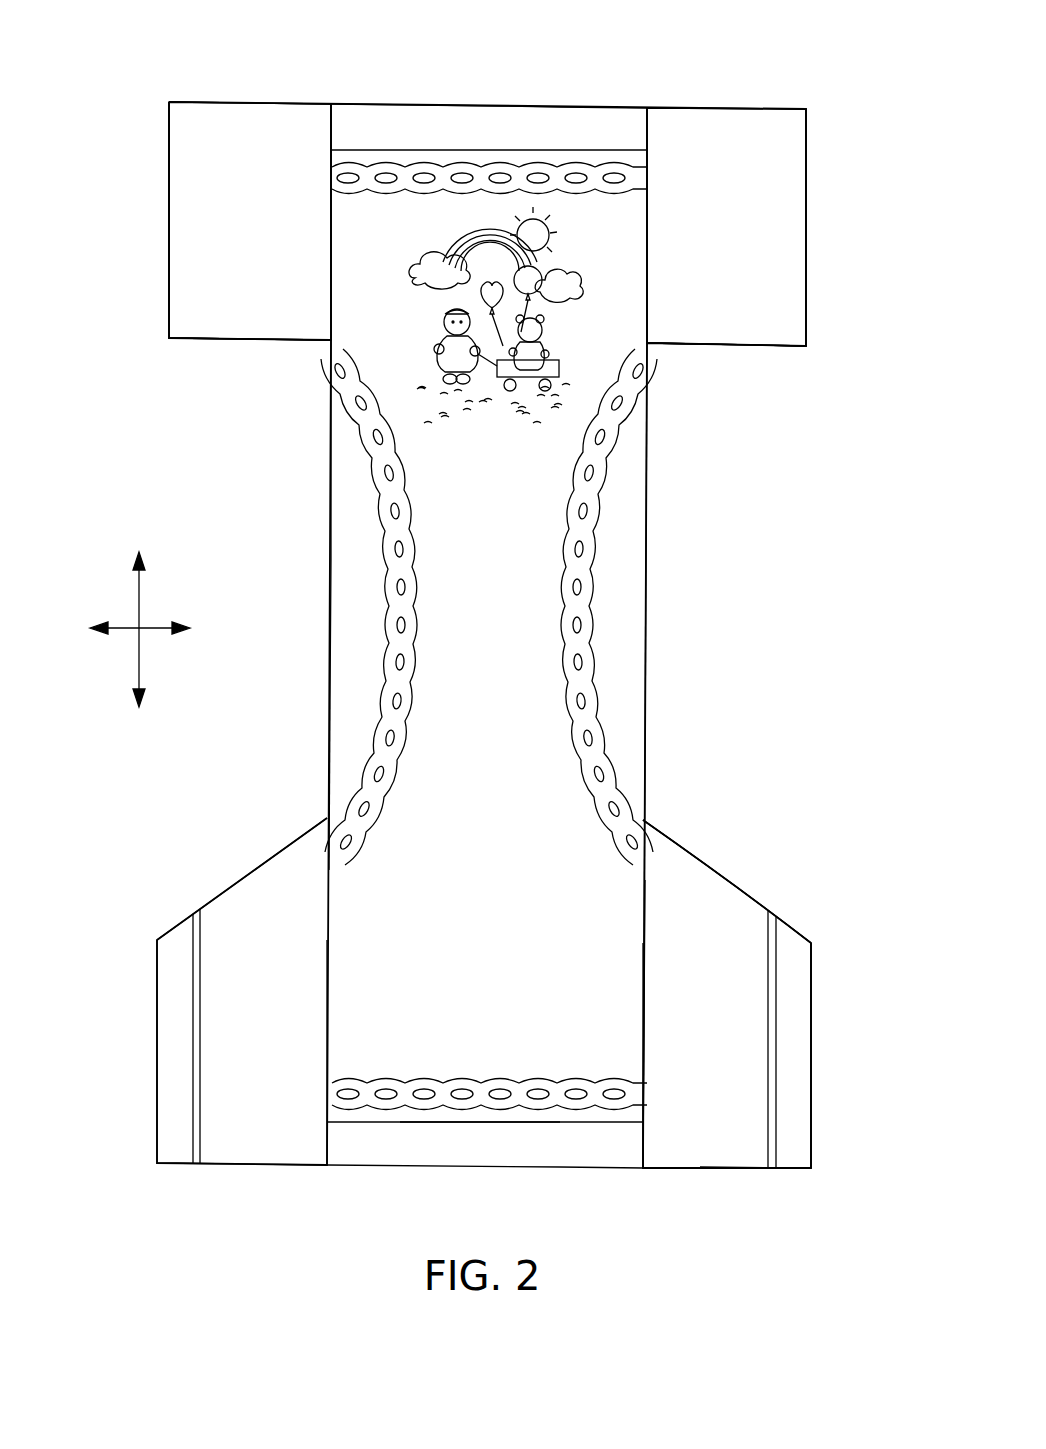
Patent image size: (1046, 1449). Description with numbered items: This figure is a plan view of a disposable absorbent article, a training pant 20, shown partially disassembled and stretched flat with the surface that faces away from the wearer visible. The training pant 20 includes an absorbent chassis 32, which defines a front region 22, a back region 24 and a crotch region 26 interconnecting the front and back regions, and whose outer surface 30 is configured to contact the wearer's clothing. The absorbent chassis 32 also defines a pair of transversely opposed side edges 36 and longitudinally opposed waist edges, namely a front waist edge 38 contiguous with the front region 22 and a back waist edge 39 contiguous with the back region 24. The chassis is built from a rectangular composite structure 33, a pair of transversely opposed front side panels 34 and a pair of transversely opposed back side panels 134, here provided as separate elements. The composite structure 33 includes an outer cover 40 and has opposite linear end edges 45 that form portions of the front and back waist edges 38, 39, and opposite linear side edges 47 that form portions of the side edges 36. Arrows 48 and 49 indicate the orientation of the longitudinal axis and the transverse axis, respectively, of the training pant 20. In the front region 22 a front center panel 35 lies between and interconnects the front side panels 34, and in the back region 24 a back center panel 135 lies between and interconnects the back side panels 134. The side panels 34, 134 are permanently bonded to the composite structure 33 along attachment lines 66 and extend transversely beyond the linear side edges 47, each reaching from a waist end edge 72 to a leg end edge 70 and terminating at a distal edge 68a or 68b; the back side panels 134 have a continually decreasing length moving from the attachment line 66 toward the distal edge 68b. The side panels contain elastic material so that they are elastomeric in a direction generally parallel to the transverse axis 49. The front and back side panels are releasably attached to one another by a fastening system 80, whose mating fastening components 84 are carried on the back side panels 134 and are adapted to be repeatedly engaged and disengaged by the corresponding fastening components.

The training pant 20 is at (240, 88).
The front region 22 is at (838, 310).
The back region 24 is at (336, 966).
The crotch region 26 is at (542, 548).
The outer surface 30 is at (632, 668).
The absorbent chassis 32 is at (578, 808).
The rectangular composite structure 33 is at (331, 748).
The front side panels 34 is at (272, 200).
The front center panel 35 is at (513, 94).
The side edges 36 is at (331, 545).
The front waist edge 38 is at (443, 104).
The back waist edge 39 is at (362, 1166).
The outer cover 40 is at (371, 375).
The linear end edges 45 is at (620, 105).
The linear side edges 47 is at (331, 598).
The longitudinal axis arrow 48 is at (139, 598).
The transverse axis arrow 49 is at (120, 635).
The attachment lines 66 is at (331, 251).
The distal edge of front side panel 68a is at (169, 262).
The distal edge of back side panel 68b is at (157, 1093).
The leg end edge 70 is at (247, 339).
The waist end edge 72 is at (293, 100).
The fastening system 80 is at (834, 1063).
The mating fastening components 84 is at (186, 1007).
The back side panels 134 is at (220, 915).
The back center panel 135 is at (468, 1038).